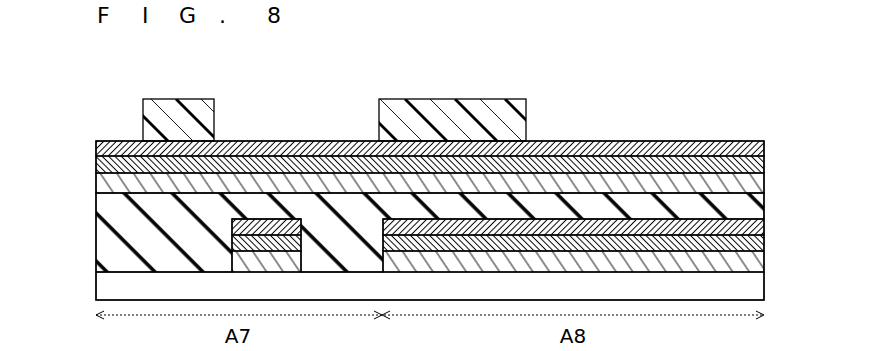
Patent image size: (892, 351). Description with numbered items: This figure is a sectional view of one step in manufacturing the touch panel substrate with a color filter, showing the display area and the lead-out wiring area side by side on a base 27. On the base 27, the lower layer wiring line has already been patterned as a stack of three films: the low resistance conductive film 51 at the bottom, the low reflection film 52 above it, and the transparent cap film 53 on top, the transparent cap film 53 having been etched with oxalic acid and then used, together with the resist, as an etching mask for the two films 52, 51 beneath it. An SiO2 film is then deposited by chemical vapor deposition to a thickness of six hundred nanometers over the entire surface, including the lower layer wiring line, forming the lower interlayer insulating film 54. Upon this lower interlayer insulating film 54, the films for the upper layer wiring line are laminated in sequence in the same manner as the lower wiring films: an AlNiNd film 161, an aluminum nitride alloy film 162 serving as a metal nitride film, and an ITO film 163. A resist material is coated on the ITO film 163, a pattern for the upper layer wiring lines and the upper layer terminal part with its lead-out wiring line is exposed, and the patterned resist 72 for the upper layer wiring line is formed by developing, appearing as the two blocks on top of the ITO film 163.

The substrate 27 is at (752, 290).
The low resistance conductive film 51 is at (753, 262).
The low reflection film 52 is at (767, 243).
The transparent cap film 53 is at (263, 220).
The lower interlayer insulating film 54 is at (105, 240).
The resist 72 is at (172, 118).
The AlNiNd film 161 is at (100, 186).
The aluminum nitride alloy film 162 is at (765, 163).
The ITO film 163 is at (767, 146).